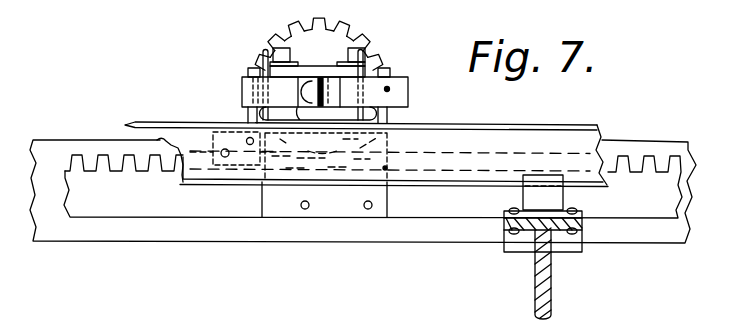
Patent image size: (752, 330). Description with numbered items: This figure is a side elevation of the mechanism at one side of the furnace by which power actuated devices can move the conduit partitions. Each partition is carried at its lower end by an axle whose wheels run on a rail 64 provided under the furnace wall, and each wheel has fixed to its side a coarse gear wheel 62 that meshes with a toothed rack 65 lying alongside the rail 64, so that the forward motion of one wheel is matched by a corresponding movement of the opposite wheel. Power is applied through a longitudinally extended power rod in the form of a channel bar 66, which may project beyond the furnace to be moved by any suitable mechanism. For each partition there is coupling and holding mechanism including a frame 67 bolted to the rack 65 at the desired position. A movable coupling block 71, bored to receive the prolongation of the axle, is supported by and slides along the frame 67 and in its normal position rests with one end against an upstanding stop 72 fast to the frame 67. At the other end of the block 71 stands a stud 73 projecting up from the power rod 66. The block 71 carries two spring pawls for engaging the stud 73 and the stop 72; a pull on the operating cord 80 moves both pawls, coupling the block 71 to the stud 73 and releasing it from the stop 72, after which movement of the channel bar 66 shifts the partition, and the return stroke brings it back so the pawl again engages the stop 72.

The coarse gear wheel 62 is at (350, 33).
The rail 64 is at (73, 134).
The toothed rack 65 is at (154, 190).
The channel bar 66 is at (458, 132).
The frame 67 is at (324, 201).
The coupling block 71 is at (325, 151).
The stop 72 is at (391, 72).
The stud 73 is at (248, 73).
The operating cord 80 is at (390, 89).